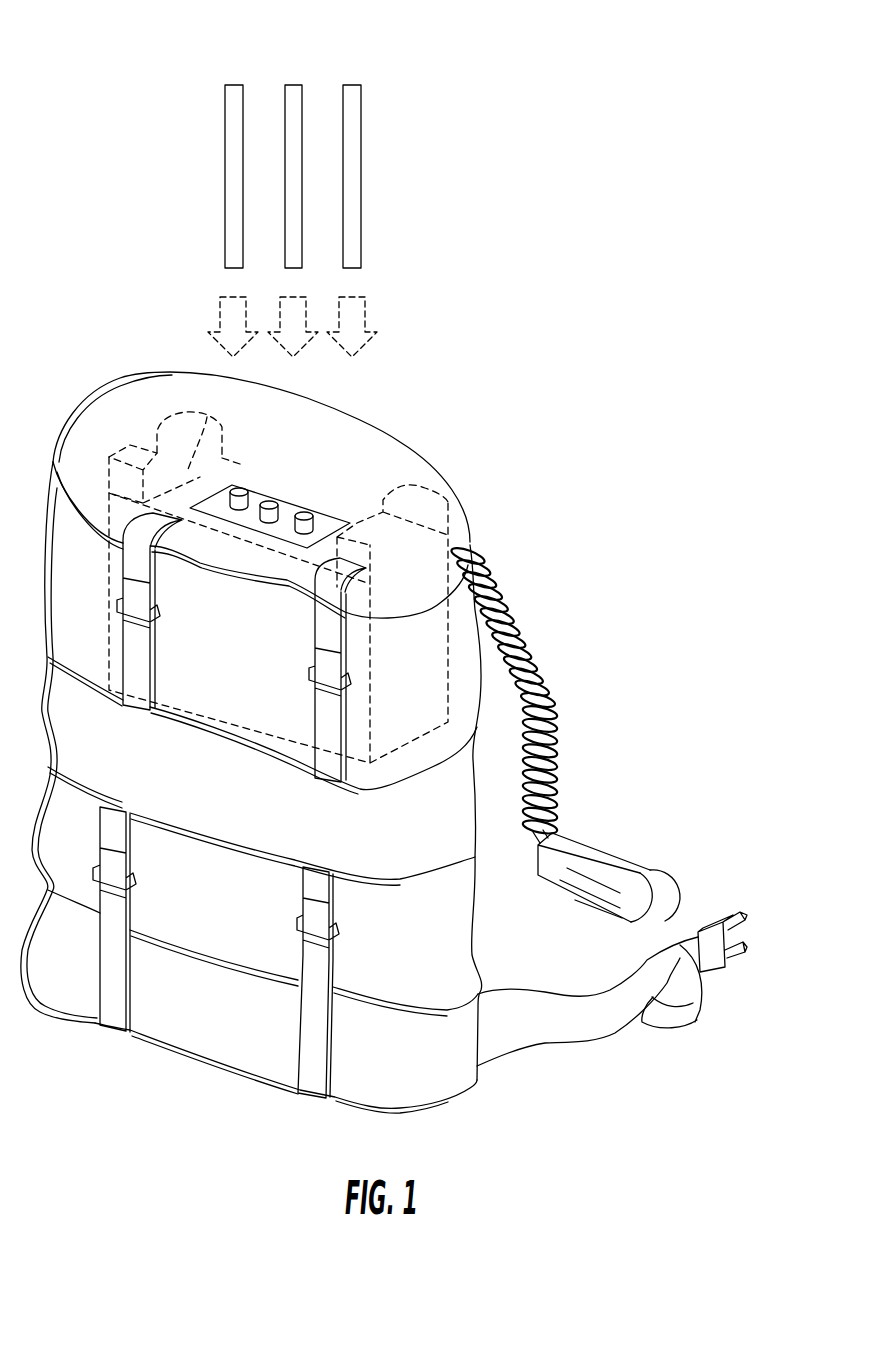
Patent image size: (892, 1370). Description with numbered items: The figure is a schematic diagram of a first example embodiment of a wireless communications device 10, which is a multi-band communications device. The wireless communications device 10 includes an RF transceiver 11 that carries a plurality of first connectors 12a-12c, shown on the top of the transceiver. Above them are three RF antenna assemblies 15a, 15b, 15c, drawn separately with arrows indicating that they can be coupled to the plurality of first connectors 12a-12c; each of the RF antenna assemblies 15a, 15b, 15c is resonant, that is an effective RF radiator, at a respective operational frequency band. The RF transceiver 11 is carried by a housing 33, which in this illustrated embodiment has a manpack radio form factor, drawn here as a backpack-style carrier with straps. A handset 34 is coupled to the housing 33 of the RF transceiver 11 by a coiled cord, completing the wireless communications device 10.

The wireless communications device 10 is at (622, 246).
The RF transceiver 11 is at (329, 494).
The first connectors 12a-12c is at (304, 511).
The RF antenna assembly 15a is at (222, 172).
The RF antenna assembly 15b is at (305, 106).
The RF antenna assembly 15c is at (363, 172).
The housing 33 is at (430, 570).
The handset 34 is at (657, 883).